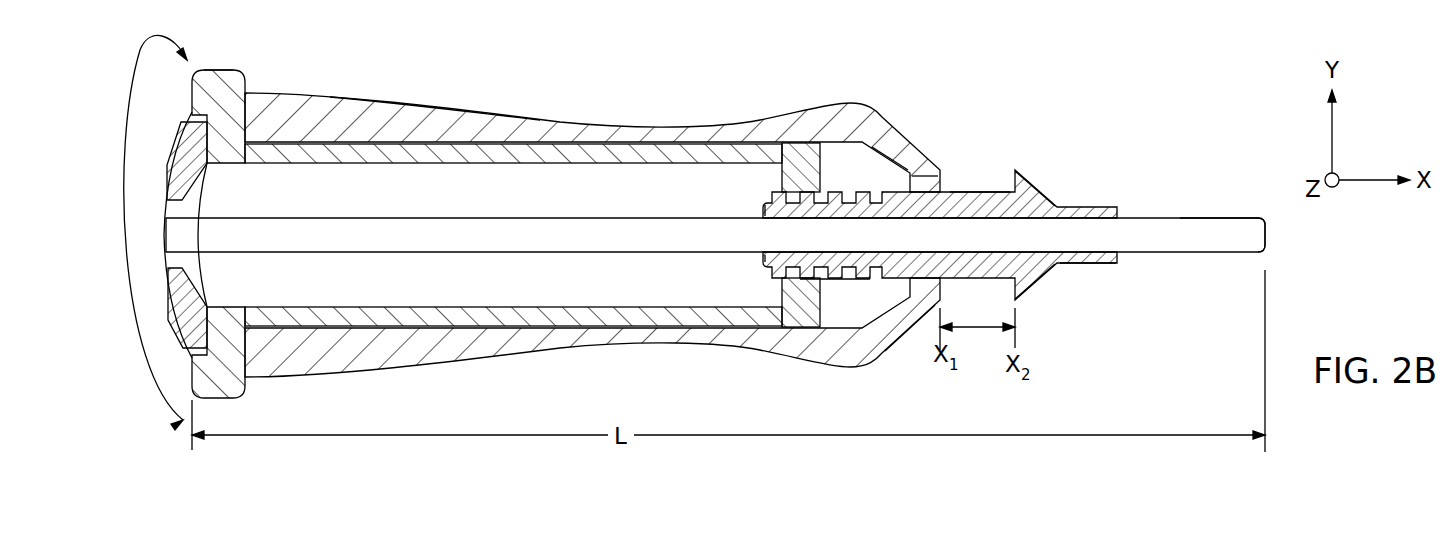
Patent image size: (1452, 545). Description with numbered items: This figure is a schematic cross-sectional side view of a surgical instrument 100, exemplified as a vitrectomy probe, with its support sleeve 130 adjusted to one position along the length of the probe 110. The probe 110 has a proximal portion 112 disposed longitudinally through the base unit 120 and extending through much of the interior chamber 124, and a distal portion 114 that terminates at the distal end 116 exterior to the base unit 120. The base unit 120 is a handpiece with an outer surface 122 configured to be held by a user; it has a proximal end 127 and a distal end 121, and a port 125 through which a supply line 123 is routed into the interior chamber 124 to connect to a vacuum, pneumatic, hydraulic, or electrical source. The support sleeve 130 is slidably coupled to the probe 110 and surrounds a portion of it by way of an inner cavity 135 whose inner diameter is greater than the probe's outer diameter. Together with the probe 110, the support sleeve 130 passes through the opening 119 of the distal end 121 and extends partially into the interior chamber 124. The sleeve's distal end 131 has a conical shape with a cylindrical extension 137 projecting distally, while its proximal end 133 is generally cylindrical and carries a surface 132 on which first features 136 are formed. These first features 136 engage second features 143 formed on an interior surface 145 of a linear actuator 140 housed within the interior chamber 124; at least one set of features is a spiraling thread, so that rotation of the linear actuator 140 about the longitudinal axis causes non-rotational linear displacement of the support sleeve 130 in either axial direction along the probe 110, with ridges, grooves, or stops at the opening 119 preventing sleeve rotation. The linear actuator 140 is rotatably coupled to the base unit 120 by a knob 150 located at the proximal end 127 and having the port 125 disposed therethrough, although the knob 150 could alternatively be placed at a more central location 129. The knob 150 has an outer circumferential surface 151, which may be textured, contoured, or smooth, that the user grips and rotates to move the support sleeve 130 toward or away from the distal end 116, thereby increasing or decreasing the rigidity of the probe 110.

The surgical instrument 100 is at (1120, 65).
The probe 110 is at (1168, 232).
The proximal portion 112 is at (976, 208).
The distal portion 114 is at (1235, 214).
The distal end 116 is at (1266, 232).
The opening 119 is at (925, 176).
The base unit 120 is at (385, 106).
The distal end 121 is at (907, 353).
The outer surface 122 is at (452, 112).
The supply line 123 is at (163, 232).
The interior chamber 124 is at (555, 293).
The port 125 is at (165, 197).
The proximal end 127 is at (165, 348).
The location 129 is at (510, 351).
The support sleeve 130 is at (902, 205).
The distal end 131 is at (1043, 204).
The surface 132 is at (847, 288).
The proximal end 133 is at (766, 262).
The inner cavity 135 is at (1040, 287).
The first features 136 is at (856, 194).
The cylindrical extension 137 is at (1100, 263).
The linear actuator 140 is at (535, 152).
The second features 143 is at (801, 192).
The surface 145 is at (798, 188).
The knob 150 is at (217, 108).
The outer circumferential surface 151 is at (218, 68).